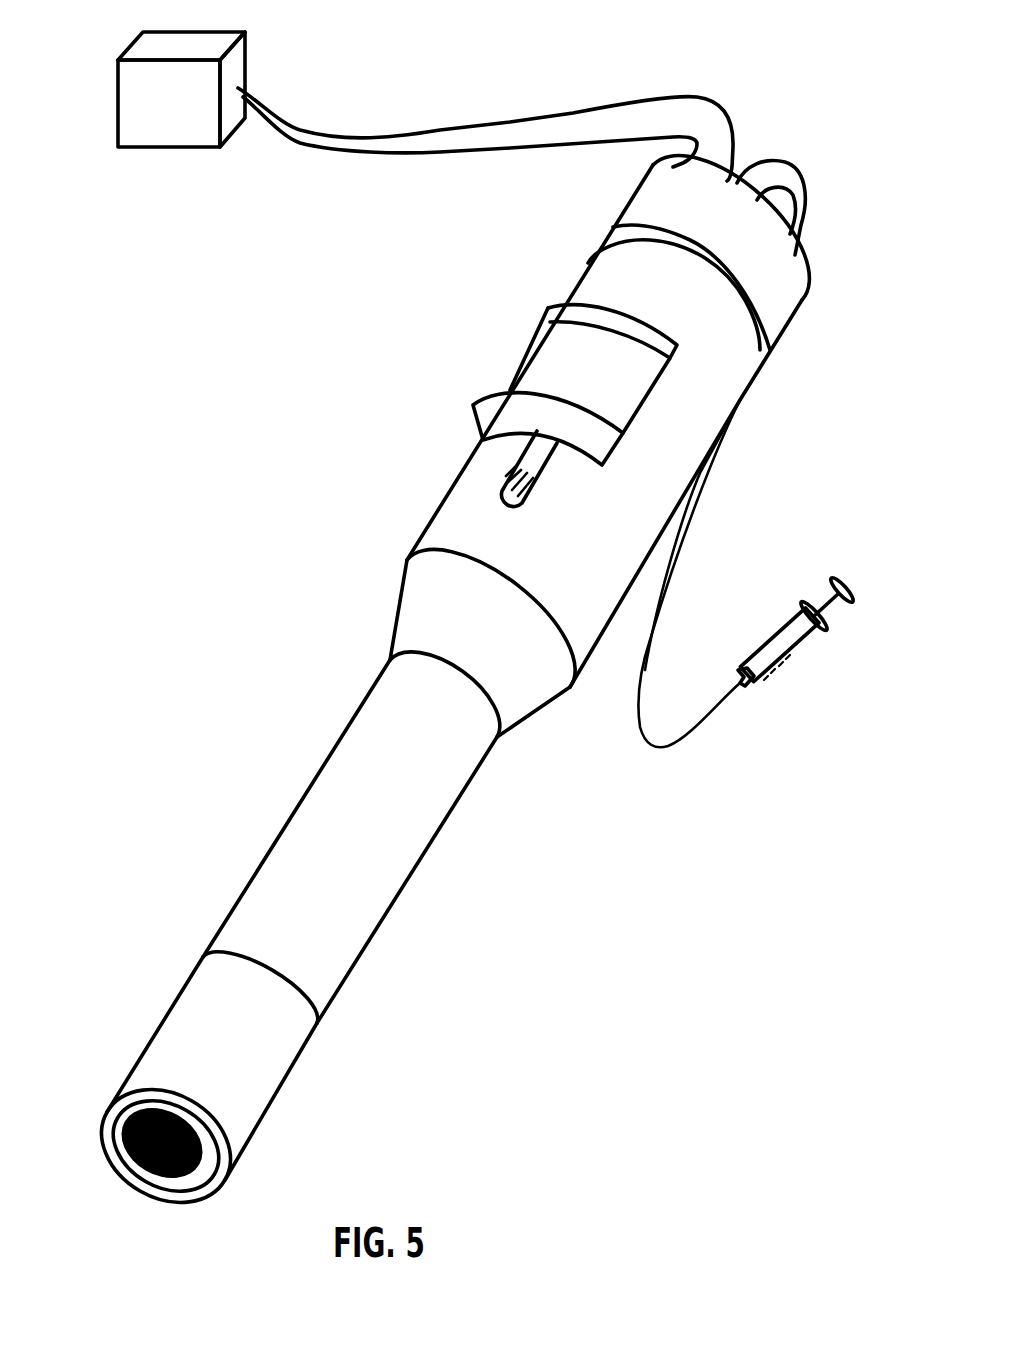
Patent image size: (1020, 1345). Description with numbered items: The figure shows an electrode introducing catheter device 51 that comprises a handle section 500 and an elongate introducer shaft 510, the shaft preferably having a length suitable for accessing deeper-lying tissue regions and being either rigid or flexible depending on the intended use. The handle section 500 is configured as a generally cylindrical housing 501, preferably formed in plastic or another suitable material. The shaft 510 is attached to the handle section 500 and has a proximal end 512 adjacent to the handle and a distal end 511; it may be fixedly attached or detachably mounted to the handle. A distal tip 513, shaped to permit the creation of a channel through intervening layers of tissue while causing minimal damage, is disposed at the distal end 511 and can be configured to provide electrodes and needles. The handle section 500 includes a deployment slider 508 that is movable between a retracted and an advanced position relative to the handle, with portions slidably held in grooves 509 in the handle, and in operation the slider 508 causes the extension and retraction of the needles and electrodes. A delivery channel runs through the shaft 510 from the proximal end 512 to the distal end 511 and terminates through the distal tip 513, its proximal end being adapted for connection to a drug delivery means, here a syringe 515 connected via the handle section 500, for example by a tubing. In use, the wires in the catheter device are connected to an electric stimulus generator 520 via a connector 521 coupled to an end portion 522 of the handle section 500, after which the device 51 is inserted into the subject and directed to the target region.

The electrode introducing catheter device 51 is at (461, 690).
The handle section 500 is at (453, 483).
The generally cylindrical housing 501 is at (447, 522).
The deployment slider 508 is at (545, 368).
The grooves 509 is at (523, 483).
The introducer shaft 510 is at (370, 905).
The distal end 511 is at (200, 962).
The proximal end 512 is at (480, 750).
The distal tip 513 is at (135, 1058).
The syringe 515 is at (800, 653).
The electric stimulus generator 520 is at (186, 142).
The connector 521 is at (470, 142).
The end portion 522 is at (790, 283).